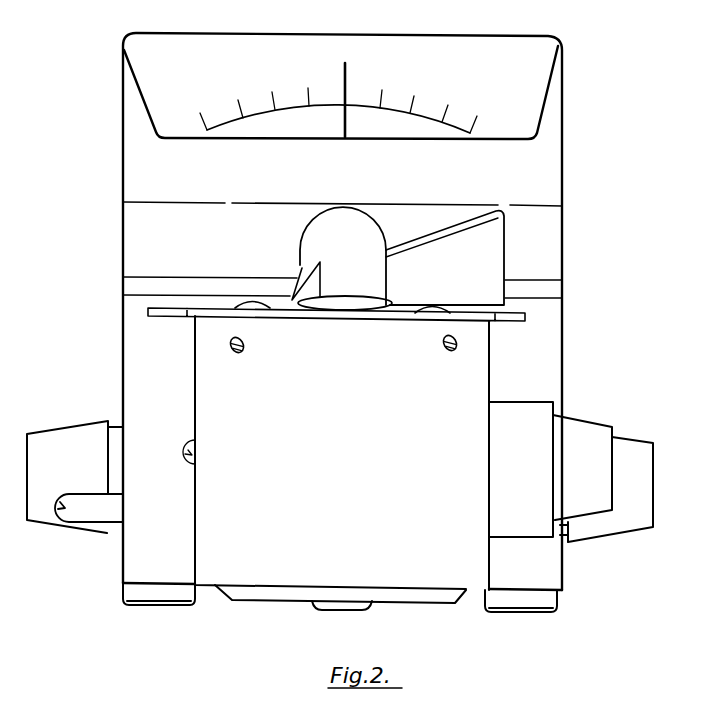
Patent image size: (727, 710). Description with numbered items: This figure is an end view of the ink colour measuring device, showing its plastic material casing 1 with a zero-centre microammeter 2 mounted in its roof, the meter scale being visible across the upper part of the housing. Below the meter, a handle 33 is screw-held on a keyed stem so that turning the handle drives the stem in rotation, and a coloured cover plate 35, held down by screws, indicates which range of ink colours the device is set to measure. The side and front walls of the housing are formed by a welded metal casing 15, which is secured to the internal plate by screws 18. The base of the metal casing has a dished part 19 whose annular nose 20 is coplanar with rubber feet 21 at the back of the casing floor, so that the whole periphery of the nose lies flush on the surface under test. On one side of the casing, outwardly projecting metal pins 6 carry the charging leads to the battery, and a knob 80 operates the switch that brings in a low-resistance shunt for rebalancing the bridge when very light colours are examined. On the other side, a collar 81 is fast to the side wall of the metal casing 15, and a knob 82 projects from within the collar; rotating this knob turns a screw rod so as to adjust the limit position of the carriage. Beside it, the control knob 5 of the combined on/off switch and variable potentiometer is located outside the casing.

The casing 1 is at (570, 167).
The zero-centre microammeter 2 is at (416, 82).
The control knob 5 is at (625, 448).
The metal pin 6 is at (86, 508).
The metal casing 15 is at (297, 485).
The screws 18 is at (230, 345).
The dished part 19 is at (462, 597).
The annular nose 20 is at (338, 610).
The rubber feet 21 is at (162, 595).
The handle 33 is at (437, 268).
The coloured cover plate 35 is at (258, 319).
The knob 80 is at (63, 467).
The collar 81 is at (511, 417).
The knob 82 is at (583, 437).